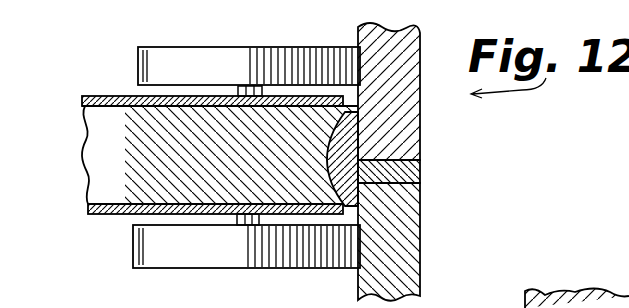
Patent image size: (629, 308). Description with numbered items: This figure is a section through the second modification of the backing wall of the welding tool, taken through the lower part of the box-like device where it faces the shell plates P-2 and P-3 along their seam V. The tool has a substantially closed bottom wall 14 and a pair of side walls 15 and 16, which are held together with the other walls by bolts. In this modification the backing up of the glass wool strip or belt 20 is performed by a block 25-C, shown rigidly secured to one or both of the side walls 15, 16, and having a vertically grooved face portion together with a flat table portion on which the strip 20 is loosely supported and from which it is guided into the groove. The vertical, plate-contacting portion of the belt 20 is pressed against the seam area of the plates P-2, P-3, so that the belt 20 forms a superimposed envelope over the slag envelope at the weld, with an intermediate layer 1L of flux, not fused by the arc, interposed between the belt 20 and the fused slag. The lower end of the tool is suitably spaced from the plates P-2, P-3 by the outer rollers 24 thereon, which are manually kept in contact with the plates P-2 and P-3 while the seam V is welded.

The bottom wall 14 is at (88, 155).
The side wall 15 is at (88, 97).
The side wall 16 is at (88, 211).
The glass wool strip or belt 20 is at (357, 127).
The outer rollers 24 is at (200, 47).
The block 25-C is at (140, 190).
The seam V is at (413, 147).
The intermediate layer 1L is at (412, 183).
The shell plate P-2 is at (423, 50).
The shell plate P-3 is at (414, 228).